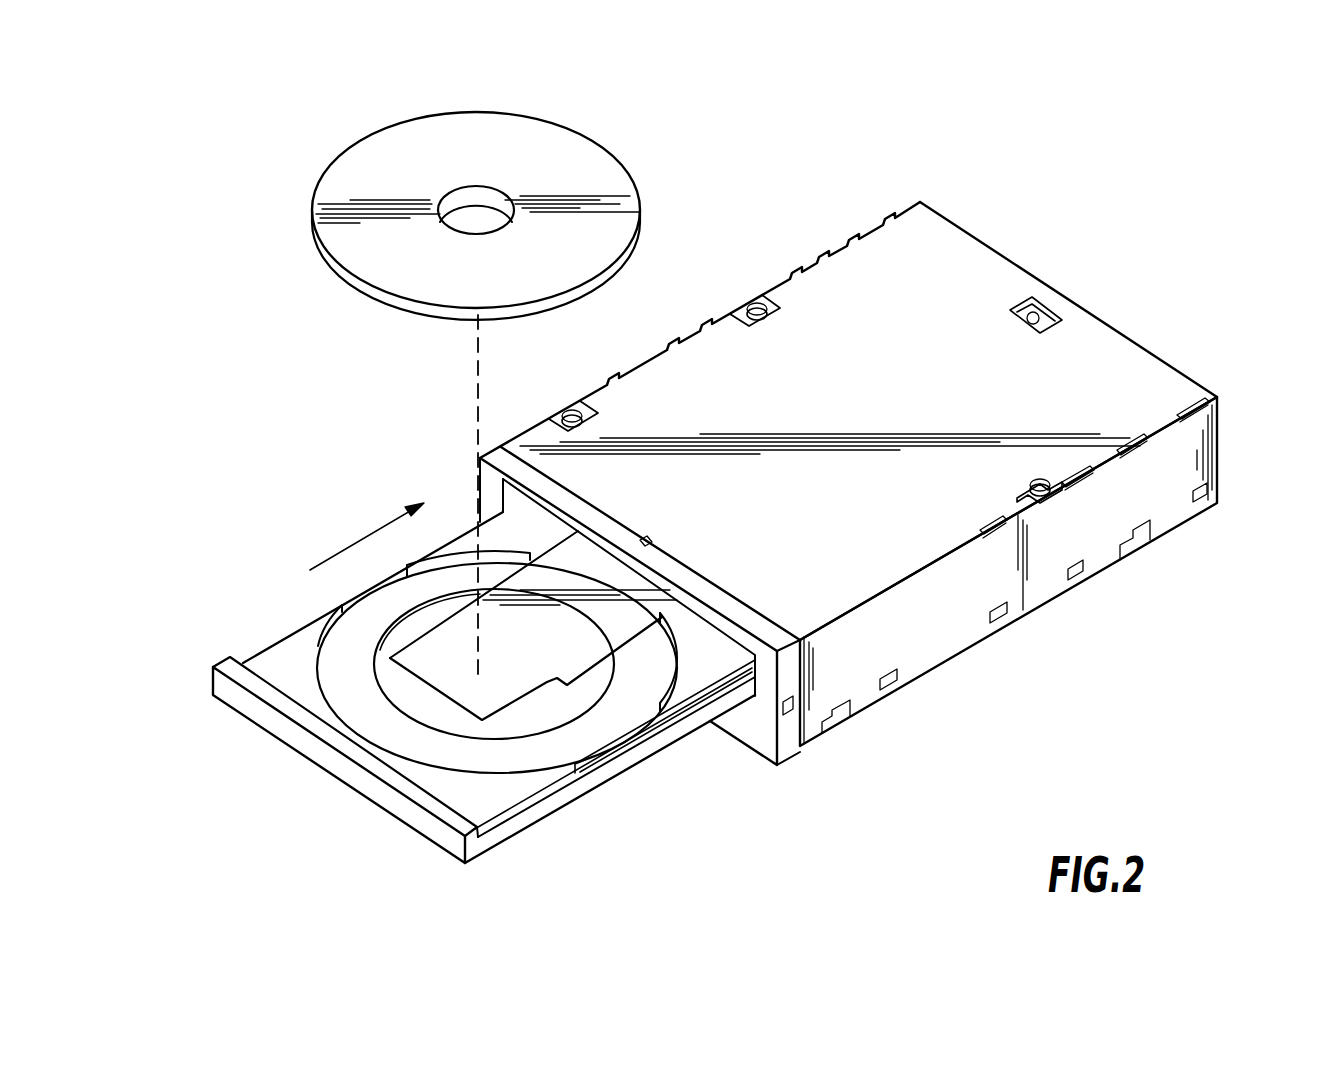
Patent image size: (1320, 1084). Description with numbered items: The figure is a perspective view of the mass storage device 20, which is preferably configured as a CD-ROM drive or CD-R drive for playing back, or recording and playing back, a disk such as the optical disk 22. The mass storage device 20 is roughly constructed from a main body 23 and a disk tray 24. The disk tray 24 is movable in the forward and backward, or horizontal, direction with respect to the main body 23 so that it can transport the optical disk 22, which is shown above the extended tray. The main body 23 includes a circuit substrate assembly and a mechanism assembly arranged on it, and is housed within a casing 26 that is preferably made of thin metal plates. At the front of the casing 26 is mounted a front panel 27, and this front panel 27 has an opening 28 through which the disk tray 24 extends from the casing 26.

The mass storage device 20 is at (1089, 629).
The optical disk 22 is at (363, 178).
The main body 23 is at (1003, 250).
The disk tray 24 is at (430, 828).
The casing 26 is at (1068, 385).
The front panel 27 is at (785, 743).
The opening 28 is at (753, 684).